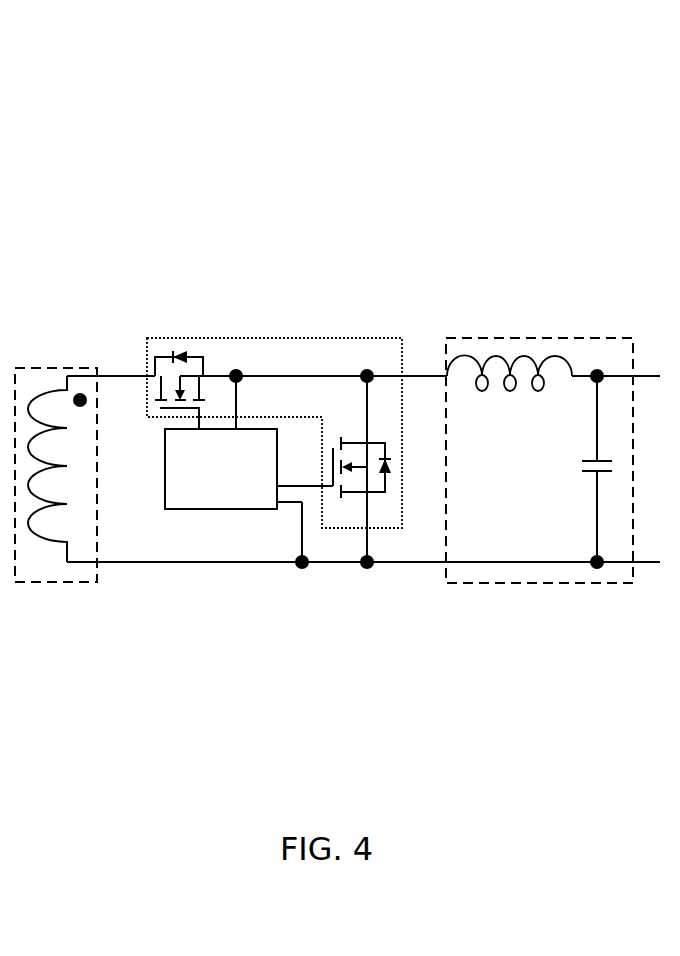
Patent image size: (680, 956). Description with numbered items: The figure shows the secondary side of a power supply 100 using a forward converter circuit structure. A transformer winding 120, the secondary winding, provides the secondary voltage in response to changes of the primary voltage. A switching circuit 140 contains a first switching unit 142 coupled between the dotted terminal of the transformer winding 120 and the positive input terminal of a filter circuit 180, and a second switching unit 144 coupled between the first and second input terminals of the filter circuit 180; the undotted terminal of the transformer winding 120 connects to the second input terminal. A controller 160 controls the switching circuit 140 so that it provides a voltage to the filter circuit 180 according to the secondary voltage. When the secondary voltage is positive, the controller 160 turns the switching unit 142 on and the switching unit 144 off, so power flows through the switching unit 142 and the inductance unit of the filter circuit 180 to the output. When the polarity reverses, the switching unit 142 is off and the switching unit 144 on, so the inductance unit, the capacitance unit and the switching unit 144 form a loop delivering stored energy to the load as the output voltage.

The power supply 100 is at (53, 58).
The transformer winding 120 is at (78, 368).
The switching circuit 140 is at (368, 337).
The switching unit 142 is at (203, 357).
The switching unit 144 is at (362, 441).
The controller 160 is at (242, 497).
The filter circuit 180 is at (533, 338).